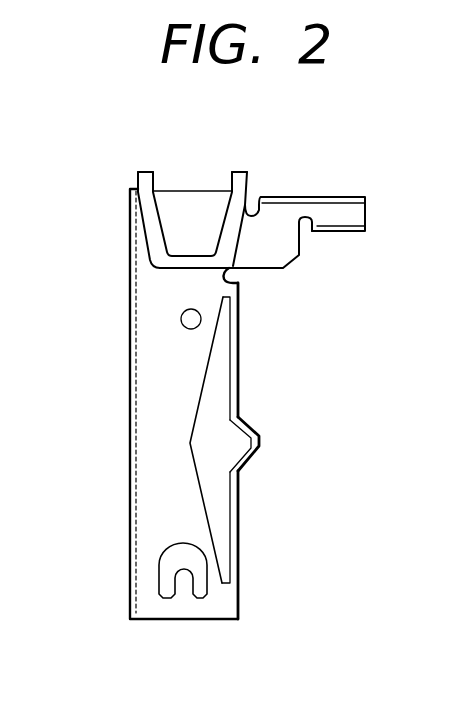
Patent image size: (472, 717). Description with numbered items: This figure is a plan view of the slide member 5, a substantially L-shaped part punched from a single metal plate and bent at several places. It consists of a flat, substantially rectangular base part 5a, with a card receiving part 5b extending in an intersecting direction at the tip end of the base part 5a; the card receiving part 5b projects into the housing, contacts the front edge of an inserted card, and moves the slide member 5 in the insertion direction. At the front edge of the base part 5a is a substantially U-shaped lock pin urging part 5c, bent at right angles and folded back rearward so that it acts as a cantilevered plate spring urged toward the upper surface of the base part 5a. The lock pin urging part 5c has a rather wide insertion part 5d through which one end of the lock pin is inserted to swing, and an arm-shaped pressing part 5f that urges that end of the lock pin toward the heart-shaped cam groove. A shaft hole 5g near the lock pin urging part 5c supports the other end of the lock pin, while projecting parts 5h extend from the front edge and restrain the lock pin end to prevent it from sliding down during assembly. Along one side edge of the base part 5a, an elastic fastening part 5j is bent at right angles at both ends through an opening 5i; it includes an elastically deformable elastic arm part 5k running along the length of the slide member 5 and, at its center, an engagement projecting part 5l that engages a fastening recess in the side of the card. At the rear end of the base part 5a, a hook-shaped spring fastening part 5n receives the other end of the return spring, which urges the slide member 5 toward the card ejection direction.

The slide member 5 is at (222, 409).
The base part 5a is at (150, 437).
The card receiving part 5b is at (343, 205).
The lock pin urging part 5c is at (148, 220).
The insertion part 5d is at (195, 185).
The pressing part 5f is at (188, 260).
The shaft hole 5g is at (189, 320).
The projecting parts 5h is at (140, 178).
The opening 5i is at (205, 458).
The elastic fastening part 5j is at (307, 443).
The elastic arm part 5k is at (240, 382).
The engagement projecting part 5l is at (260, 437).
The spring fastening part 5n is at (182, 583).